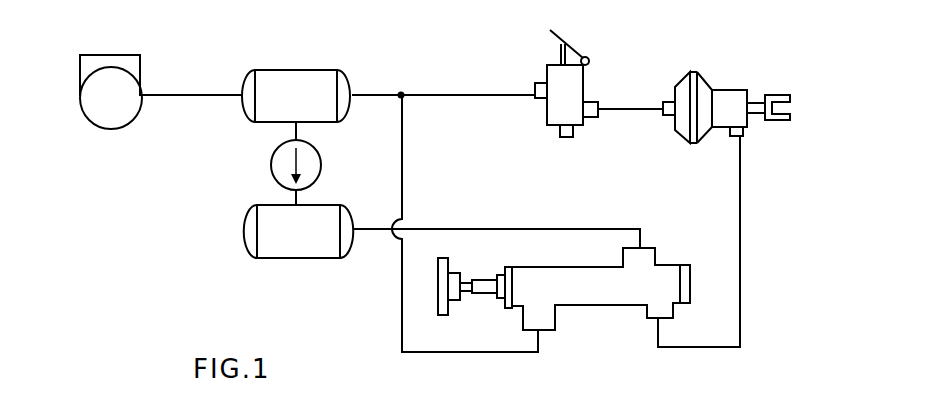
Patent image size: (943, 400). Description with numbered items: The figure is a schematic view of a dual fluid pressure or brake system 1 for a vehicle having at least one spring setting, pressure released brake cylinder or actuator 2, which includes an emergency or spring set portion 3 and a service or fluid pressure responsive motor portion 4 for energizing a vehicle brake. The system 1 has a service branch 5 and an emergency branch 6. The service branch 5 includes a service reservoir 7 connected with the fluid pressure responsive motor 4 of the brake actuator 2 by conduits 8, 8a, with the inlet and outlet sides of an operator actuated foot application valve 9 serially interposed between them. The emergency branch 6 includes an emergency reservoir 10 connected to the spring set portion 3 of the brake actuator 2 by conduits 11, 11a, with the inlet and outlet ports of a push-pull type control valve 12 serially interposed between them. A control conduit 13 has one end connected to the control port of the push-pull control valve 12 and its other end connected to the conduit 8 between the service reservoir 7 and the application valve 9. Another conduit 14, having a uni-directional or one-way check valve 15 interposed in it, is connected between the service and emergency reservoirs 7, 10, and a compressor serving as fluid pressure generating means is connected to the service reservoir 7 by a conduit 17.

The dual fluid pressure or brake system 1 is at (625, 55).
The brake cylinder or actuator 2 is at (730, 82).
The emergency or spring set portion 3 is at (734, 120).
The service or fluid pressure responsive motor portion 4 is at (676, 133).
The service branch 5 is at (230, 130).
The emergency branch 6 is at (80, 63).
The service reservoir 7 is at (286, 70).
The conduit 8 is at (368, 95).
The conduit 8a is at (650, 91).
The operator actuated foot application valve 9 is at (572, 107).
The emergency reservoir 10 is at (318, 250).
The conduit 11 is at (478, 229).
The conduit 11a is at (740, 248).
The push-pull type control valve 12 is at (659, 273).
The control conduit 13 is at (402, 172).
The conduit 14 is at (300, 198).
The uni-directional or one-way check valve 15 is at (275, 178).
The conduit 17 is at (189, 95).